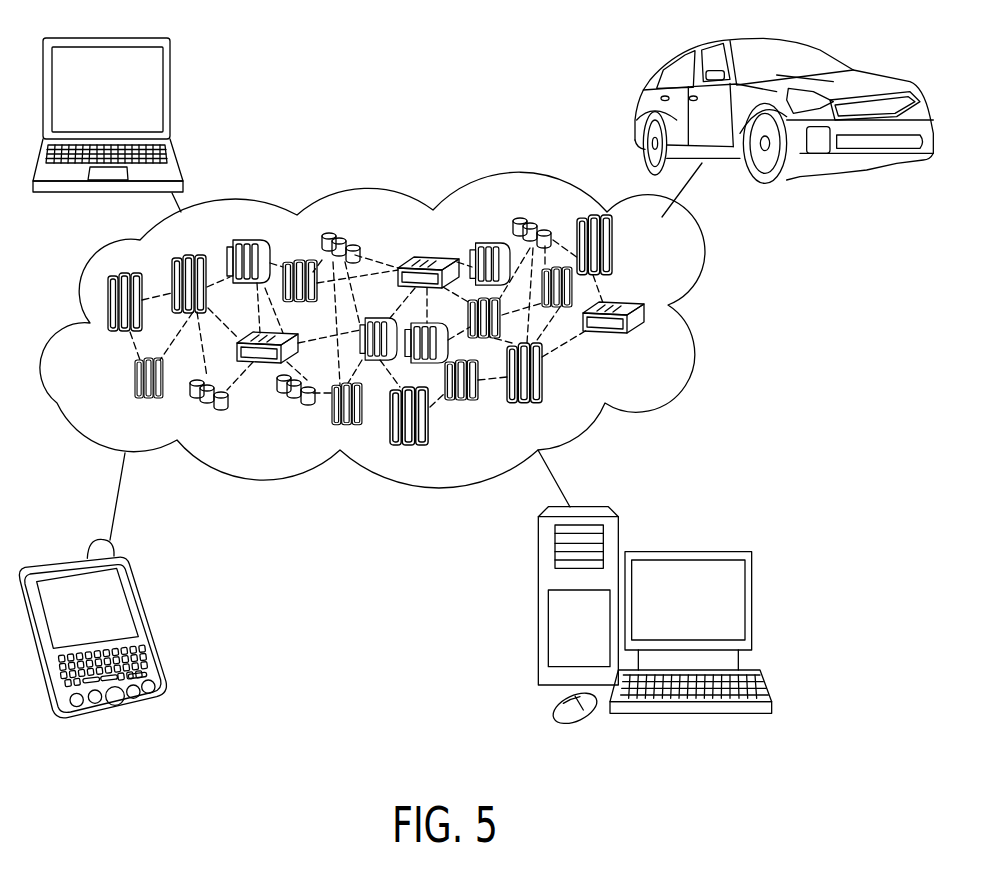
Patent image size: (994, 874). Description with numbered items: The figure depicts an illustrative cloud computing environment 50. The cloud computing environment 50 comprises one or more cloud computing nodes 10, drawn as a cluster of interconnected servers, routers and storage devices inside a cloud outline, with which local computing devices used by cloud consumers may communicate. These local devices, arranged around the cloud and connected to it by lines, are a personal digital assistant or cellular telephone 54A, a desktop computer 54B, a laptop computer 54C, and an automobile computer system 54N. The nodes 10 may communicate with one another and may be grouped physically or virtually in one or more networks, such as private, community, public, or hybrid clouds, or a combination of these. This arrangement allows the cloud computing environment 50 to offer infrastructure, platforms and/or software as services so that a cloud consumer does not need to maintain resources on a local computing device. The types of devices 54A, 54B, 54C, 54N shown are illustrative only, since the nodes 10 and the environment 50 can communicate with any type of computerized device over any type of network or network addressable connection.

The cloud computing node 10 is at (670, 366).
The cloud computing environment 50 is at (705, 257).
The personal digital assistant or cellular telephone 54A is at (140, 598).
The desktop computer 54B is at (752, 598).
The laptop computer 54C is at (171, 93).
The automobile computer system 54N is at (819, 60).